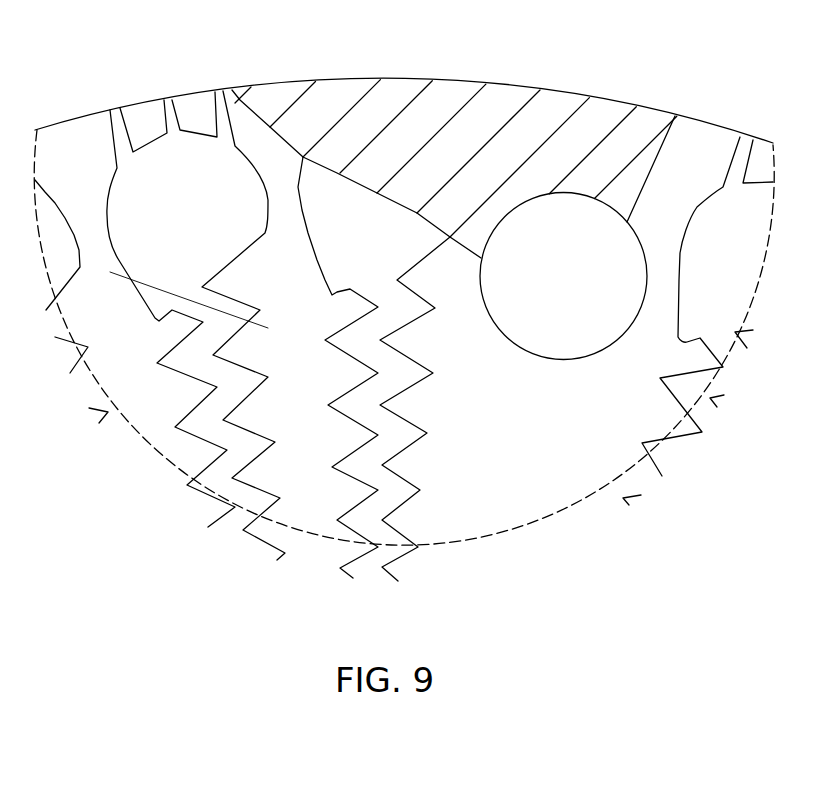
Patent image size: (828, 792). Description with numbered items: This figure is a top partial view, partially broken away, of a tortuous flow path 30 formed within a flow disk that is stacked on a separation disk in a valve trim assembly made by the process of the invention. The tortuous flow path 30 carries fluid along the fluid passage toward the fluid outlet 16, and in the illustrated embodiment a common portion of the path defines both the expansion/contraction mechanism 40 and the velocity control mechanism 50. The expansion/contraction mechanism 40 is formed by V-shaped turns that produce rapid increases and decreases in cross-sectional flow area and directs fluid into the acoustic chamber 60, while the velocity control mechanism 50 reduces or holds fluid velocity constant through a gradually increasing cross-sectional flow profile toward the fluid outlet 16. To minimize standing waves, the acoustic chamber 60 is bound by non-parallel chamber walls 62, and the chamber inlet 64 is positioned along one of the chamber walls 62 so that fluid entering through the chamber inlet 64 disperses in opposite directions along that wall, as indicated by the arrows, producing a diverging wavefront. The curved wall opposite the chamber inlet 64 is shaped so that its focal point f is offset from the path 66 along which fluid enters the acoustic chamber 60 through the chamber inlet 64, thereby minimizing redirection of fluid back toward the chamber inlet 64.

The fluid outlet 16 is at (80, 53).
The tortuous flow path 30 is at (434, 432).
The expansion/contraction mechanism 40 is at (410, 367).
The velocity control mechanism 50 is at (410, 484).
The acoustic chamber 60 is at (155, 155).
The chamber walls 62 is at (108, 187).
The chamber inlet 64 is at (215, 297).
The path 66 is at (163, 303).
The focal point f is at (185, 168).